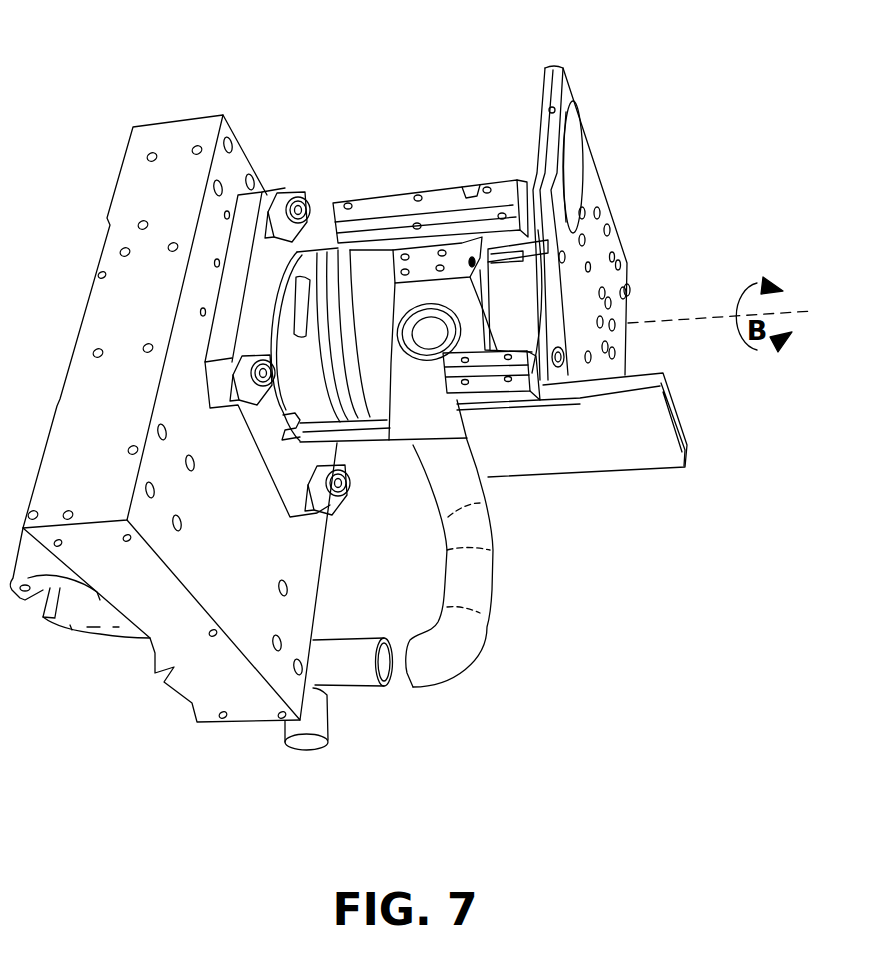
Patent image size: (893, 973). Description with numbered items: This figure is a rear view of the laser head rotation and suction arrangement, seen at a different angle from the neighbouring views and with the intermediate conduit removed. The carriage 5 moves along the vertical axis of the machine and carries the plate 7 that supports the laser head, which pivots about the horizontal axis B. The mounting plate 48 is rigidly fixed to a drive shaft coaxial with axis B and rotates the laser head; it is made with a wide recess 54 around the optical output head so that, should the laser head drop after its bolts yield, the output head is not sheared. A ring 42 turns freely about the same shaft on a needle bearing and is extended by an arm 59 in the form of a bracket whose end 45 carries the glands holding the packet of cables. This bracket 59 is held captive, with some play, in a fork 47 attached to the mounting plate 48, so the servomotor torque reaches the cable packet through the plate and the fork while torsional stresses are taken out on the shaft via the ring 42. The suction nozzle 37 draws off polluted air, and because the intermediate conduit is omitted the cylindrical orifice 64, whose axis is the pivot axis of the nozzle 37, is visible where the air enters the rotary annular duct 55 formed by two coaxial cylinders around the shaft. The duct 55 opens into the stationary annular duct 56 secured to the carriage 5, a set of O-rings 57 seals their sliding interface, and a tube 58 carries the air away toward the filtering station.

The carriage 5 is at (172, 143).
The plate 7 is at (267, 277).
The suction nozzle 37 is at (682, 420).
The ring 42 is at (508, 303).
The end of the arm 45 is at (342, 203).
The fork 47 is at (535, 240).
The mounting plate 48 is at (563, 70).
The wide recess 54 is at (570, 150).
The annular duct 55 is at (430, 263).
The stationary annular duct 56 is at (367, 272).
The O-rings 57 is at (418, 420).
The tube 58 is at (462, 593).
The arm 59 is at (502, 190).
The cylindrical orifice 64 is at (423, 337).